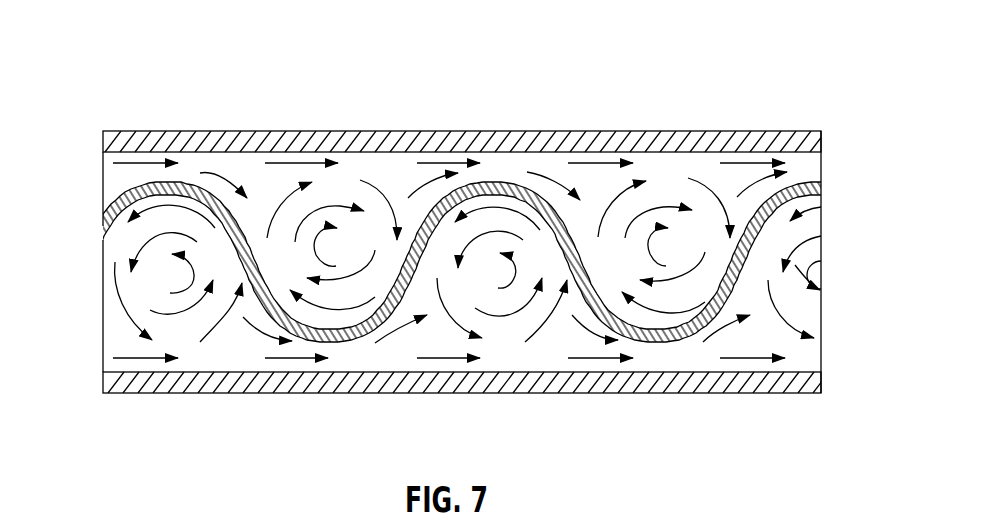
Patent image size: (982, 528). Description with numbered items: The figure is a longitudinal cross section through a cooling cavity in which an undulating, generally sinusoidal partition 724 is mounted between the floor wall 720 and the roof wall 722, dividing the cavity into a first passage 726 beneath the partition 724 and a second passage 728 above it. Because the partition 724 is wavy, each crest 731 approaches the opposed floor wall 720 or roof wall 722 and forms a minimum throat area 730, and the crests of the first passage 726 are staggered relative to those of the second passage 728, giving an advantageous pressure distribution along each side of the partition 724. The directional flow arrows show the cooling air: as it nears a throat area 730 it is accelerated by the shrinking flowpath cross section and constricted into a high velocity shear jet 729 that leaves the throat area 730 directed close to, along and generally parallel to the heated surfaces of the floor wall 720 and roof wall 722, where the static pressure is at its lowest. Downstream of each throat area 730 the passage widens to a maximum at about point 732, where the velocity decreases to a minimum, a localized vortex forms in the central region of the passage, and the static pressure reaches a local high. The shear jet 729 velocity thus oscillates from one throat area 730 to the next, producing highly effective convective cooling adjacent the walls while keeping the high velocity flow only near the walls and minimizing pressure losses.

The floor wall 720 is at (416, 380).
The roof wall 722 is at (228, 150).
The partition 724 is at (108, 227).
The first passage 726 is at (108, 331).
The second passage 728 is at (108, 194).
The shear jet 729 is at (148, 162).
The throat area 730 is at (487, 158).
The crest 731 is at (130, 195).
The point of maximum passage cross section 732 is at (338, 248).